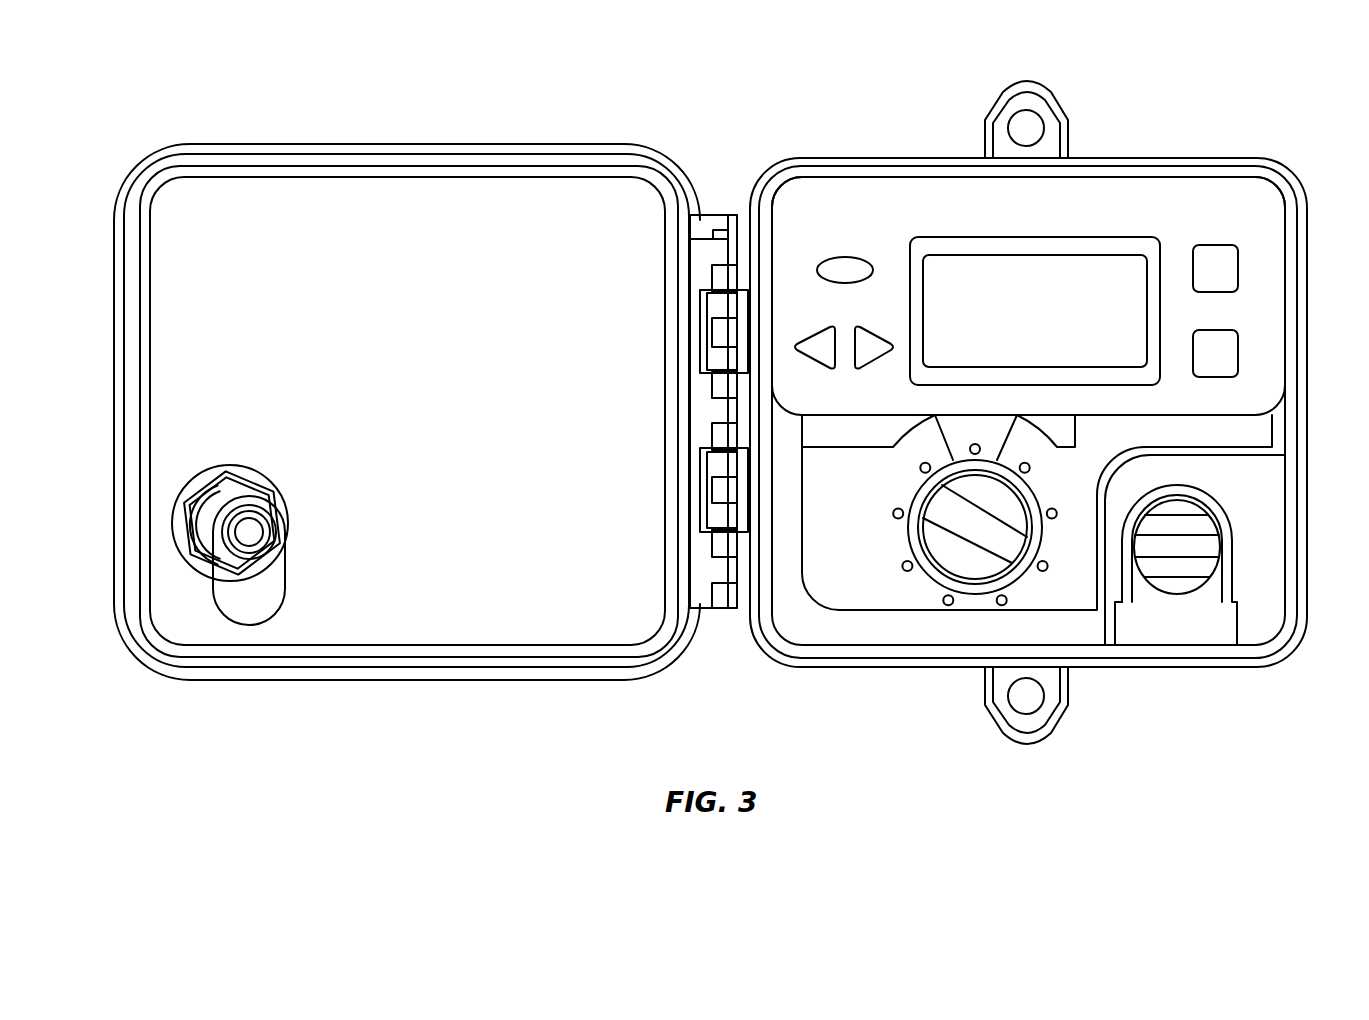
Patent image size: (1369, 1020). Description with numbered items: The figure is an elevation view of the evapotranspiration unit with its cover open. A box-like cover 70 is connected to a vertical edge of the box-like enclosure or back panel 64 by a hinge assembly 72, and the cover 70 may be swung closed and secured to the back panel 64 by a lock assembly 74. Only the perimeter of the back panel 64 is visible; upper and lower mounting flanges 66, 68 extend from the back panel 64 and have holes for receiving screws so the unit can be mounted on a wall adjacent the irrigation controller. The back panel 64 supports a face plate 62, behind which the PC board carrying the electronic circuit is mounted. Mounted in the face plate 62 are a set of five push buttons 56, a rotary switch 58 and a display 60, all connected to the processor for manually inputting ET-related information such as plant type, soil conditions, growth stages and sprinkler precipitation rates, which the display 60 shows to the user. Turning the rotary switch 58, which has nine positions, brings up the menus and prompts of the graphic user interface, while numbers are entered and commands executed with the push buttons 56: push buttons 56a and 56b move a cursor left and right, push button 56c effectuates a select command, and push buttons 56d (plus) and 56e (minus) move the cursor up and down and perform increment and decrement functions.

The cover 70 is at (473, 172).
The hinge assembly 72 is at (731, 218).
The lock assembly 74 is at (213, 528).
The back panel 64 is at (873, 158).
The upper mounting flange 66 is at (1052, 102).
The lower mounting flange 68 is at (1068, 682).
The face plate 62 is at (1095, 222).
The display 60 is at (1107, 253).
The push buttons 56 is at (1043, 303).
The push button 56a is at (828, 368).
The push button 56b is at (857, 328).
The push button 56c is at (845, 257).
The push button 56d is at (1217, 245).
The push button 56e is at (1217, 330).
The rotary switch 58 is at (947, 550).